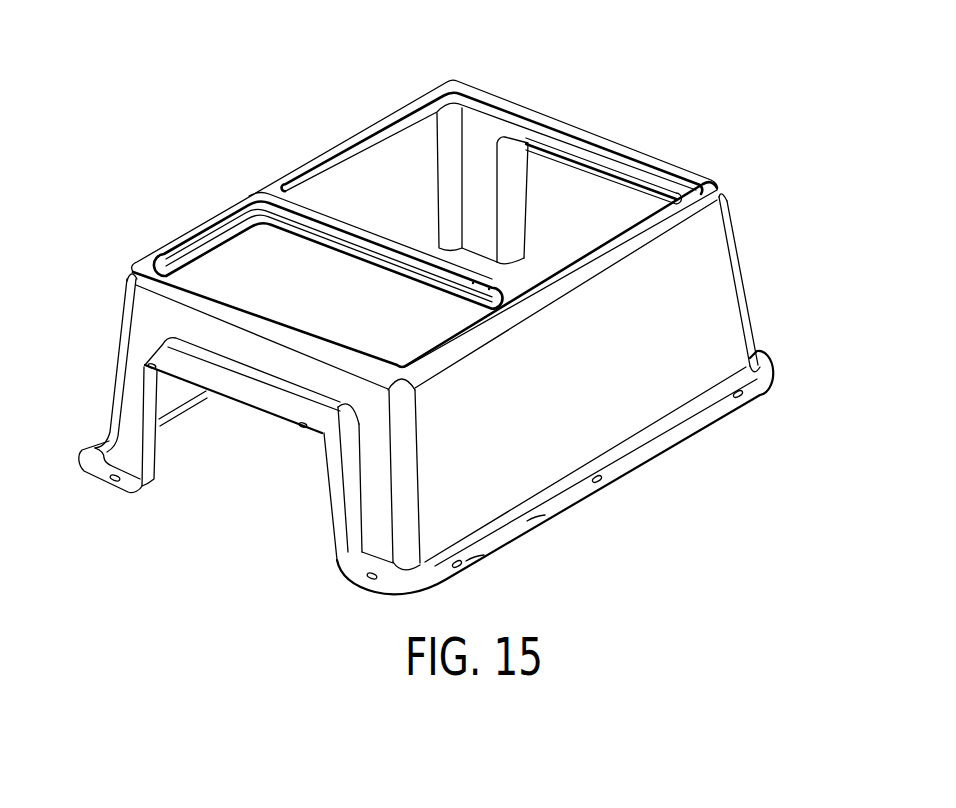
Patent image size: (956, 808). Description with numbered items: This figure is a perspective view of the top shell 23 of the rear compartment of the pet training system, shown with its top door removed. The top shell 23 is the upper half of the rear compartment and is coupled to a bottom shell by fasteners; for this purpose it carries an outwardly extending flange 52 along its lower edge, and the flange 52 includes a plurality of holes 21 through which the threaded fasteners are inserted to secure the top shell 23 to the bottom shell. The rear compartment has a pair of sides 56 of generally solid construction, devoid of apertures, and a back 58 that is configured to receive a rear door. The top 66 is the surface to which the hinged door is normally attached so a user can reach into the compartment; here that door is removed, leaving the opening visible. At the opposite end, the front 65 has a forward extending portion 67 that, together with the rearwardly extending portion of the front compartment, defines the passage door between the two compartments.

The holes 21 is at (482, 558).
The top shell 23 is at (88, 218).
The flange 52 is at (546, 517).
The sides 56 is at (366, 178).
The back 58 is at (607, 109).
The front 65 is at (153, 521).
The top 66 is at (210, 267).
The forward extending portion 67 is at (249, 412).